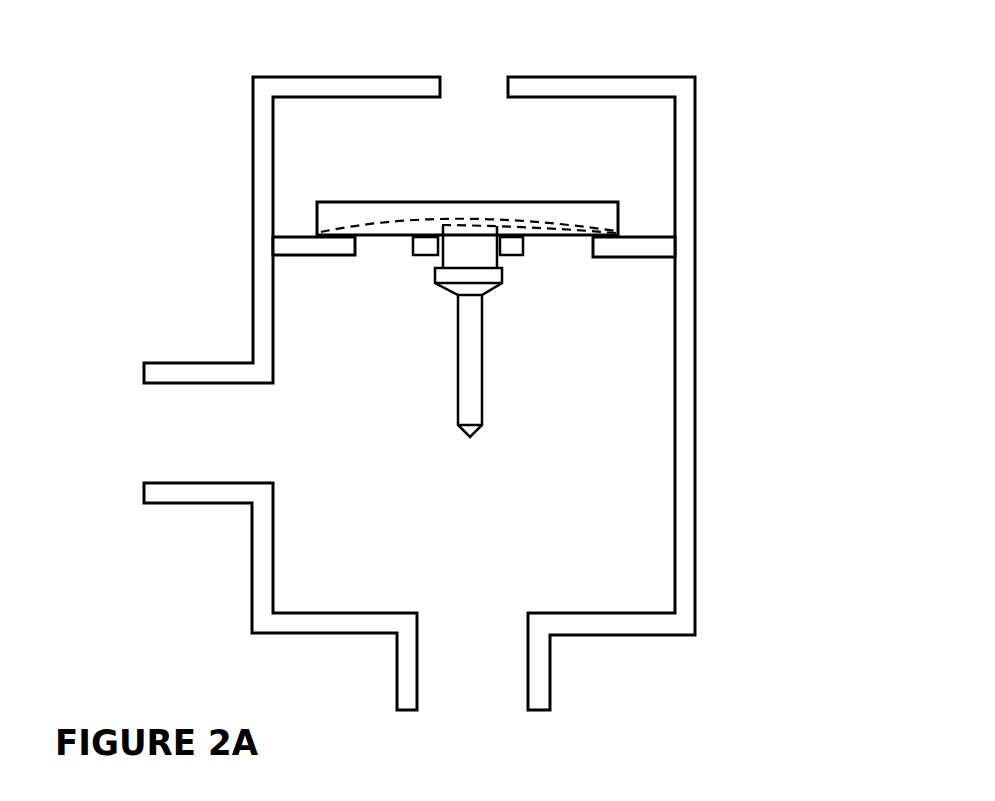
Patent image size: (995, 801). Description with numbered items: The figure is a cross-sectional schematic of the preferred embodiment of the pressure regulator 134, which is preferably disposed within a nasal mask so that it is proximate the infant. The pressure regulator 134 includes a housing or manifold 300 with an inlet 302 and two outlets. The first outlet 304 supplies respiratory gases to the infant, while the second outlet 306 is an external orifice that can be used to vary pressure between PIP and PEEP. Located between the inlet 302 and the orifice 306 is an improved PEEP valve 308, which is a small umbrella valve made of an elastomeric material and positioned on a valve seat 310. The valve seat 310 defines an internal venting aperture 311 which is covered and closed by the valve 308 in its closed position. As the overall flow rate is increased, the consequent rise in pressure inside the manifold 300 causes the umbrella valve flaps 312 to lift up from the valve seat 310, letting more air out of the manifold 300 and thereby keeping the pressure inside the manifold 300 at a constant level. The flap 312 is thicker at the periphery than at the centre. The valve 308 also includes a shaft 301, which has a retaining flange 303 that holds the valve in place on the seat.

The pressure regulator 134 is at (750, 385).
The housing or manifold 300 is at (695, 540).
The shaft 301 is at (483, 387).
The inlet 302 is at (155, 435).
The retaining flange 303 is at (432, 275).
The first outlet 304 is at (508, 702).
The second outlet 306 is at (508, 73).
The PEEP valve 308 is at (622, 219).
The valve seat 310 is at (613, 258).
The internal venting aperture 311 is at (392, 252).
The umbrella valve flaps 312 is at (600, 197).